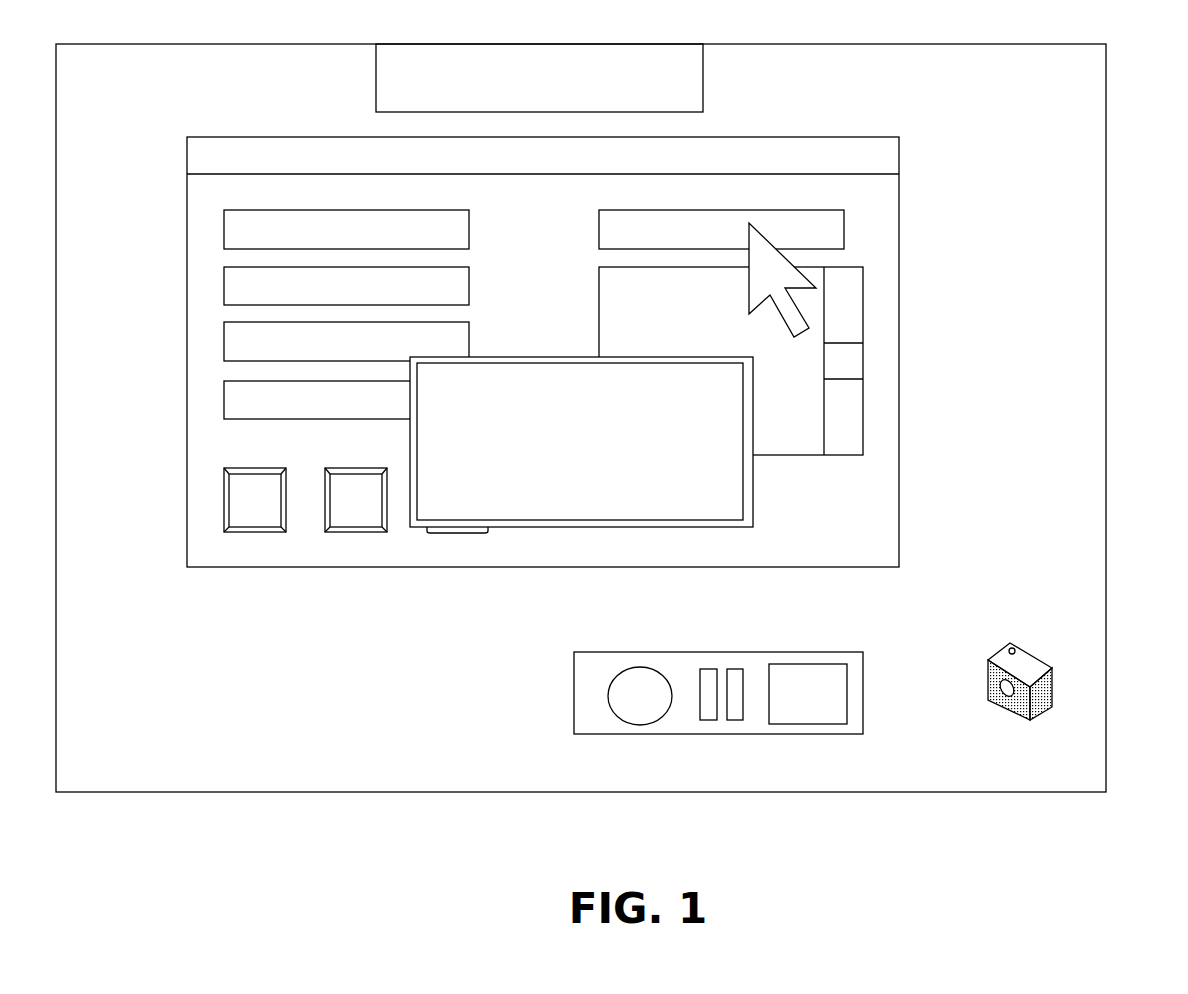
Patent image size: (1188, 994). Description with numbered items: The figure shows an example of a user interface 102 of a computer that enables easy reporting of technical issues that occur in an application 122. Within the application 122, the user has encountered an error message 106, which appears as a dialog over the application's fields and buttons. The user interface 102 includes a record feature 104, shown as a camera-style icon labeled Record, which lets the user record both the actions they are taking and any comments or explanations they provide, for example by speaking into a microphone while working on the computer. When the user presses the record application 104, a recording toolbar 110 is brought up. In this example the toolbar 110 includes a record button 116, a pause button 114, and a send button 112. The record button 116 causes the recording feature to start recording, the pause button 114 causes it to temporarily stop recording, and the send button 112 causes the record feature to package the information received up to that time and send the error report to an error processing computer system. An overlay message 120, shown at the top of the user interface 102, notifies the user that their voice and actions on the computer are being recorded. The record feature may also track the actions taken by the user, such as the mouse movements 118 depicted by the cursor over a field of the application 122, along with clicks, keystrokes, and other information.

The user interface 102 is at (1106, 287).
The record feature 104 is at (1003, 648).
The error message 106 is at (520, 358).
The recording toolbar 110 is at (866, 692).
The send button 112 is at (818, 663).
The pause button 114 is at (736, 670).
The record button 116 is at (636, 668).
The mouse movements 118 is at (772, 243).
The overlay message 120 is at (703, 80).
The application 122 is at (899, 223).